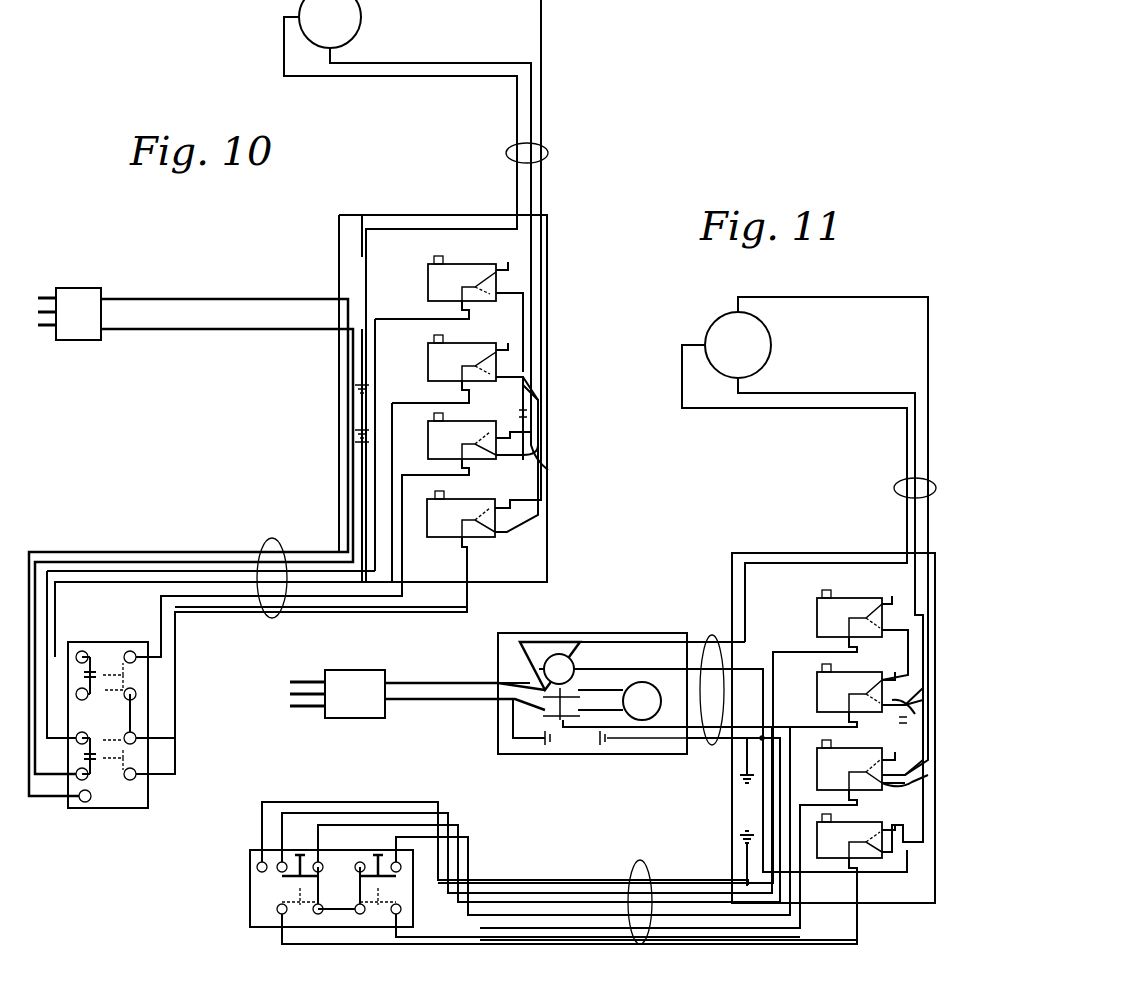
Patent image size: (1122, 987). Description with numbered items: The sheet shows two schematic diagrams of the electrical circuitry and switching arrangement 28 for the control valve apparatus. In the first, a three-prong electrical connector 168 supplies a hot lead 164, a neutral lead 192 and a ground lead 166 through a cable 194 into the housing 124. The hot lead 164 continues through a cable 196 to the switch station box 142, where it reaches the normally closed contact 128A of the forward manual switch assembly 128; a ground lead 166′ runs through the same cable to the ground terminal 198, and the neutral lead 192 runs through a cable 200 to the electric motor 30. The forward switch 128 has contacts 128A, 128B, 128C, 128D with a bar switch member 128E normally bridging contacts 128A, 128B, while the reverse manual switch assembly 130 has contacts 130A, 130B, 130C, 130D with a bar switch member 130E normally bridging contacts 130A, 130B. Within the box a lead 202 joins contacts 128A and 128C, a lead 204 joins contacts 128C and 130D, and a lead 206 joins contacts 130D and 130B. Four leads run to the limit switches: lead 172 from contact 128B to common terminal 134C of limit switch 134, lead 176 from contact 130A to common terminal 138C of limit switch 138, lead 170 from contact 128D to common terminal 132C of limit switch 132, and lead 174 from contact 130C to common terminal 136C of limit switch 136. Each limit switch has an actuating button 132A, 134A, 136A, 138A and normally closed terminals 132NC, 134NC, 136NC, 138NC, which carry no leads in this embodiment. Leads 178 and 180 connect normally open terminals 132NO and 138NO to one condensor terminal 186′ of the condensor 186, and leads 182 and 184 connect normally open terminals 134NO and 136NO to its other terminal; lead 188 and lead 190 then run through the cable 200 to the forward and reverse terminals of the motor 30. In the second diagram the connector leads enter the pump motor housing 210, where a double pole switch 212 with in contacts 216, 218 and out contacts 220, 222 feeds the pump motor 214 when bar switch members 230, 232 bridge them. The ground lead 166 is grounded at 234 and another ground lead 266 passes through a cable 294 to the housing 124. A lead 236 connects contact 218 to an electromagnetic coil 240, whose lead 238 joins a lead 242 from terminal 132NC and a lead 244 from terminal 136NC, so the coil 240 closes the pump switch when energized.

In FIG. 10, the electrical circuitry and switching arrangement 28 is at (239, 396).
In FIG. 10, the electric motor 30 is at (362, 17).
In FIG. 11, the electric motor 30 is at (772, 343).
In FIG. 10, the housing 124 is at (399, 212).
In FIG. 11, the housing 124 is at (830, 553).
In FIG. 10, the forward manual switch assembly 128 is at (136, 763).
In FIG. 11, the forward manual switch assembly 128 is at (267, 904).
In FIG. 10, the normally closed contact 128A is at (76, 732).
In FIG. 11, the normally closed contact 128A is at (322, 862).
In FIG. 10, the normally closed contact 128B is at (74, 777).
In FIG. 11, the normally closed contact 128B is at (288, 860).
In FIG. 10, the normally open contact 128C is at (138, 744).
In FIG. 11, the normally open contact 128C is at (316, 914).
In FIG. 10, the normally open contact 128D is at (136, 778).
In FIG. 11, the normally open contact 128D is at (278, 914).
In FIG. 10, the bar switch member 128E is at (96, 775).
In FIG. 11, the bar switch member 128E is at (287, 880).
In FIG. 10, the reverse manual switch assembly 130 is at (137, 678).
In FIG. 11, the reverse manual switch assembly 130 is at (384, 925).
In FIG. 10, the normally closed contact 130A is at (90, 652).
In FIG. 11, the normally closed contact 130A is at (400, 862).
In FIG. 10, the normally closed contact 130B is at (76, 694).
In FIG. 11, the normally closed contact 130B is at (354, 864).
In FIG. 10, the normally open contact 130C is at (145, 640).
In FIG. 11, the normally open contact 130C is at (402, 912).
In FIG. 10, the normally open contact 130D is at (136, 694).
In FIG. 11, the normally open contact 130D is at (354, 914).
In FIG. 10, the bar switch member 130E is at (98, 662).
In FIG. 11, the bar switch member 130E is at (380, 854).
In FIG. 10, the limit switch 132 is at (461, 518).
In FIG. 11, the limit switch 132 is at (849, 840).
In FIG. 10, the actuating button 132A is at (434, 497).
In FIG. 11, the actuating button 132A is at (831, 818).
In FIG. 10, the common terminal 132C is at (460, 546).
In FIG. 11, the common terminal 132C is at (850, 866).
In FIG. 10, the normally closed terminal 132NC is at (512, 506).
In FIG. 11, the normally closed terminal 132NC is at (888, 830).
In FIG. 10, the normally open terminal 132NO is at (500, 538).
In FIG. 11, the normally open terminal 132NO is at (886, 858).
In FIG. 10, the limit switch 134 is at (462, 282).
In FIG. 11, the limit switch 134 is at (849, 617).
In FIG. 10, the actuating button 134A is at (434, 260).
In FIG. 11, the actuating button 134A is at (822, 590).
In FIG. 10, the common terminal 134C is at (457, 308).
In FIG. 11, the common terminal 134C is at (852, 644).
In FIG. 10, the normally closed terminal 134NC is at (508, 248).
In FIG. 11, the normally closed terminal 134NC is at (890, 598).
In FIG. 10, the normally open terminal 134NO is at (500, 302).
In FIG. 11, the normally open terminal 134NO is at (888, 636).
In FIG. 10, the limit switch 136 is at (462, 440).
In FIG. 11, the limit switch 136 is at (849, 769).
In FIG. 10, the actuating button 136A is at (434, 418).
In FIG. 11, the actuating button 136A is at (831, 744).
In FIG. 10, the common terminal 136C is at (462, 467).
In FIG. 11, the common terminal 136C is at (850, 798).
In FIG. 10, the normally closed terminal 136NC is at (503, 432).
In FIG. 11, the normally closed terminal 136NC is at (892, 752).
In FIG. 10, the normally open terminal 136NO is at (520, 466).
In FIG. 11, the normally open terminal 136NO is at (888, 790).
In FIG. 10, the limit switch 138 is at (462, 362).
In FIG. 11, the limit switch 138 is at (849, 692).
In FIG. 10, the actuating button 138A is at (434, 340).
In FIG. 11, the actuating button 138A is at (822, 666).
In FIG. 10, the common terminal 138C is at (446, 393).
In FIG. 11, the common terminal 138C is at (850, 720).
In FIG. 10, the normally closed terminal 138NC is at (508, 332).
In FIG. 11, the normally closed terminal 138NC is at (895, 676).
In FIG. 10, the normally open terminal 138NO is at (500, 384).
In FIG. 11, the normally open terminal 138NO is at (888, 712).
In FIG. 10, the switch station box 142 is at (130, 808).
In FIG. 11, the switch station box 142 is at (252, 848).
In FIG. 10, the hot lead 164 is at (342, 497).
In FIG. 11, the hot lead 164 is at (492, 680).
In FIG. 10, the ground lead 166 is at (349, 361).
In FIG. 11, the ground lead 166 is at (512, 750).
In FIG. 10, the ground lead 166′ is at (348, 470).
In FIG. 11, the ground lead 166′ is at (688, 882).
In FIG. 10, the electrical connector 168 is at (90, 290).
In FIG. 11, the electrical connector 168 is at (360, 672).
In FIG. 10, the electrical lead 170 is at (240, 610).
In FIG. 11, the electrical lead 170 is at (692, 940).
In FIG. 10, the electrical lead 172 is at (205, 558).
In FIG. 11, the electrical lead 172 is at (546, 892).
In FIG. 10, the electrical lead 174 is at (207, 598).
In FIG. 11, the electrical lead 174 is at (672, 928).
In FIG. 10, the electrical lead 176 is at (330, 585).
In FIG. 11, the electrical lead 176 is at (738, 920).
In FIG. 10, the electrical lead 178 is at (541, 500).
In FIG. 11, the electrical lead 178 is at (926, 812).
In FIG. 10, the electrical lead 180 is at (523, 370).
In FIG. 11, the electrical lead 180 is at (916, 714).
In FIG. 10, the electrical lead 182 is at (528, 324).
In FIG. 11, the electrical lead 182 is at (912, 628).
In FIG. 10, the electrical lead 184 is at (541, 478).
In FIG. 11, the electrical lead 184 is at (926, 786).
In FIG. 10, the condensor 186 is at (532, 410).
In FIG. 11, the condensor 186 is at (910, 724).
In FIG. 10, the condensor terminal 186′ is at (528, 378).
In FIG. 11, the condensor terminal 186′ is at (920, 680).
In FIG. 10, the electrical lead 188 is at (546, 299).
In FIG. 11, the electrical lead 188 is at (930, 598).
In FIG. 10, the electrical lead 190 is at (540, 428).
In FIG. 11, the electrical lead 190 is at (931, 555).
In FIG. 10, the neutral lead 192 is at (362, 257).
In FIG. 11, the neutral lead 192 is at (777, 563).
In FIG. 10, the cable 194 is at (216, 323).
In FIG. 11, the cable 194 is at (434, 697).
In FIG. 10, the cable 196 is at (268, 545).
In FIG. 11, the cable 196 is at (634, 868).
In FIG. 10, the ground terminal 198 is at (82, 802).
In FIG. 11, the ground terminal 198 is at (242, 867).
In FIG. 10, the cable 200 is at (548, 152).
In FIG. 11, the cable 200 is at (897, 490).
In FIG. 10, the lead 202 is at (114, 729).
In FIG. 11, the lead 202 is at (322, 884).
In FIG. 10, the lead 204 is at (134, 716).
In FIG. 11, the lead 204 is at (330, 915).
In FIG. 10, the lead 206 is at (110, 695).
In FIG. 11, the lead 206 is at (356, 892).
In FIG. 11, the pump motor housing 210 is at (618, 633).
In FIG. 11, the double pole switch 212 is at (580, 670).
In FIG. 11, the pump motor 214 is at (656, 686).
In FIG. 11, the in contact 216 is at (535, 708).
In FIG. 11, the in contact 218 is at (512, 677).
In FIG. 11, the out contact 220 is at (582, 712).
In FIG. 11, the out contact 222 is at (584, 688).
In FIG. 11, the bar switch member 230 is at (578, 700).
In FIG. 11, the bar switch member 232 is at (540, 740).
In FIG. 11, the ground connection 234 is at (556, 740).
In FIG. 11, the lead 236 is at (552, 664).
In FIG. 11, the lead 238 is at (660, 662).
In FIG. 11, the electromagnetic coil 240 is at (558, 648).
In FIG. 11, the lead 242 is at (880, 880).
In FIG. 11, the lead 244 is at (798, 736).
In FIG. 11, the ground lead 266 is at (652, 754).
In FIG. 11, the cable 294 is at (722, 620).